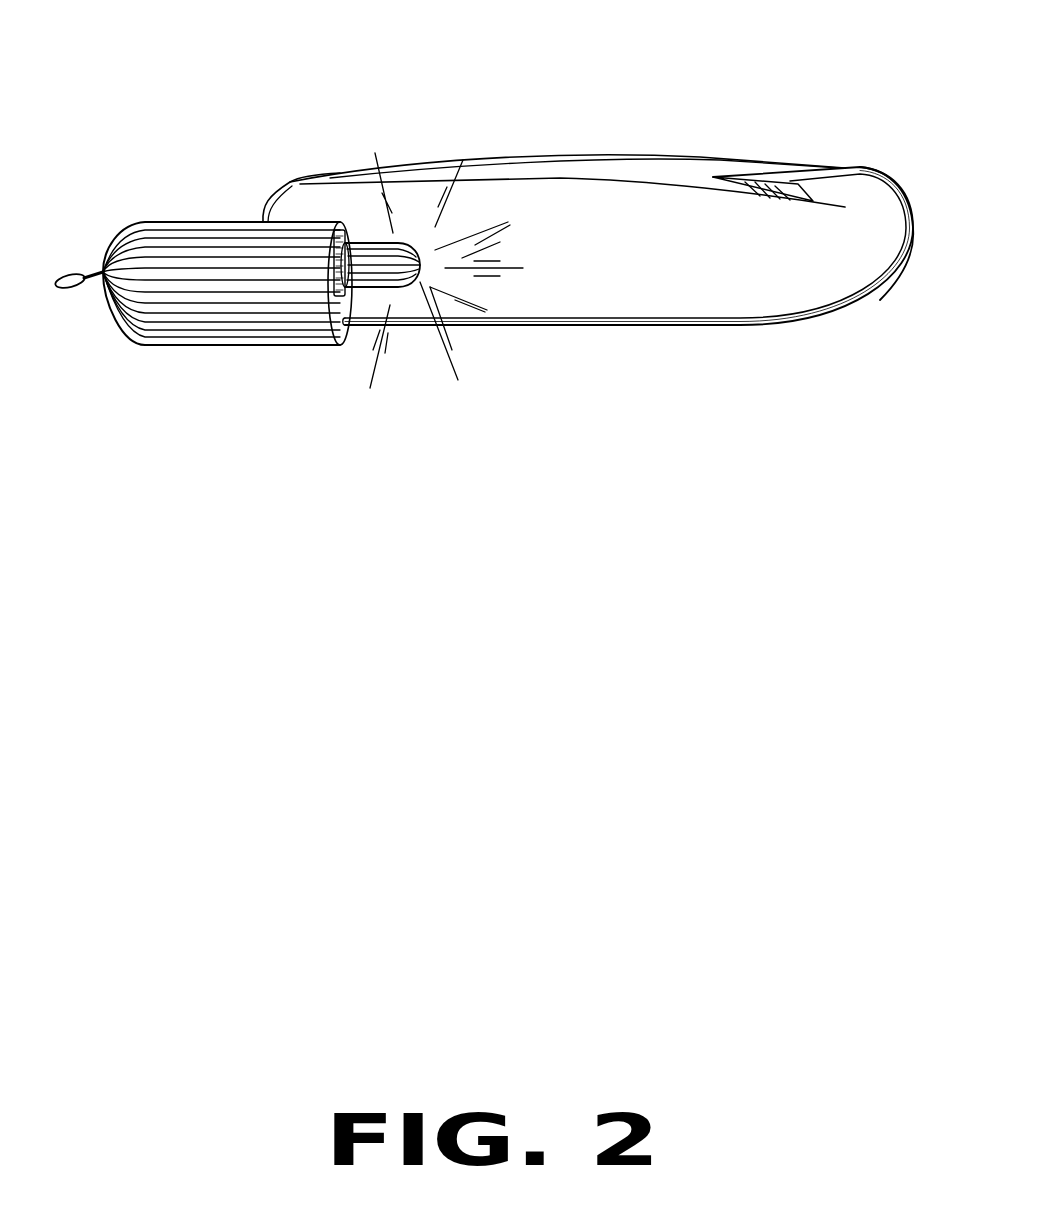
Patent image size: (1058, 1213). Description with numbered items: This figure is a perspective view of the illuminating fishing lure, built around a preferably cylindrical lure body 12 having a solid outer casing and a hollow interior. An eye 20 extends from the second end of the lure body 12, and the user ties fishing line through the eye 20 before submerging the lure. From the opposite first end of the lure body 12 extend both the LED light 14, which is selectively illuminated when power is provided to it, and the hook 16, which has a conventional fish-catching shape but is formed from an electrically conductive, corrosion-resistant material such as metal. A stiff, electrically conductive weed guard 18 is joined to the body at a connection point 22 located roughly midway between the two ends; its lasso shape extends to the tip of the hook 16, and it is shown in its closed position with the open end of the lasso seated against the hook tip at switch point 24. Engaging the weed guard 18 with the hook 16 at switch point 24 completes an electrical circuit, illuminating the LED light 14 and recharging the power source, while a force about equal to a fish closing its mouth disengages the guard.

The lure body 12 is at (233, 347).
The LED light 14 is at (420, 280).
The hook 16 is at (757, 178).
The weed guard 18 is at (562, 155).
The eye 20 is at (72, 268).
The connection point 22 is at (257, 213).
The switch point 24 is at (908, 178).